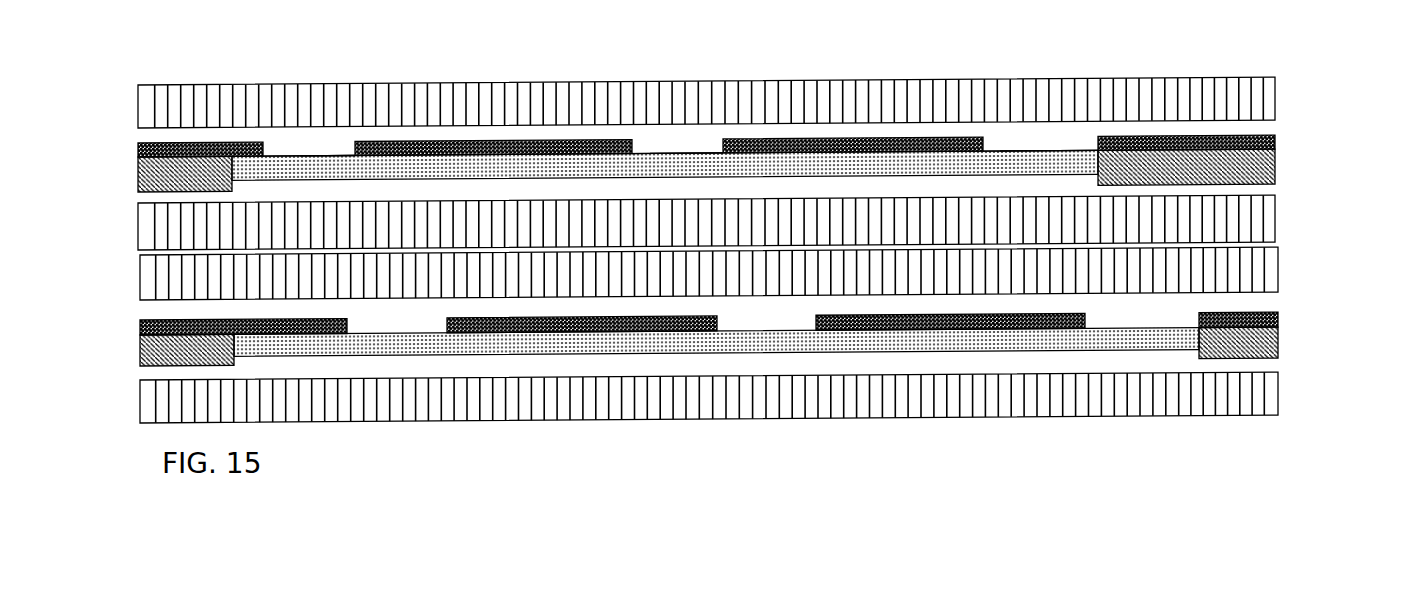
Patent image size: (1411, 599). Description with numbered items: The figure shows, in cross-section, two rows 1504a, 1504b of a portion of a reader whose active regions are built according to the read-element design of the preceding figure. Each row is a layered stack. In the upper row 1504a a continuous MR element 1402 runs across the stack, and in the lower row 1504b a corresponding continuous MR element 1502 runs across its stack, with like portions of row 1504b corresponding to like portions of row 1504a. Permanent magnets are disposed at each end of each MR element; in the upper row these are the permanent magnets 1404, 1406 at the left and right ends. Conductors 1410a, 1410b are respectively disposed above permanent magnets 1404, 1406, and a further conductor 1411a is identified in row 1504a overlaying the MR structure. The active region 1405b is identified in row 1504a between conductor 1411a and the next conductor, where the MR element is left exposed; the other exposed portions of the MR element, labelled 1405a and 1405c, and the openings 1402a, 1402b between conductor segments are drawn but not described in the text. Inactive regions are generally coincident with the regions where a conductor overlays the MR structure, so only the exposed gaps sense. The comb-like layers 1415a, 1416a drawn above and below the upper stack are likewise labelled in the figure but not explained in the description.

The continuous MR element 1402 is at (660, 180).
The first opening in electrode layer 1402a is at (287, 147).
The second opening in electrode layer 1402b is at (660, 145).
The permanent magnet 1404 is at (157, 158).
The first exposed region of dielectric 1405a is at (338, 157).
The active region 1405b is at (677, 153).
The third exposed region of dielectric 1405c is at (1028, 148).
The permanent magnet 1406 is at (1276, 166).
The conductor 1410a is at (197, 144).
The conductor 1410b is at (1276, 143).
The conductor 1411a is at (492, 143).
The upper shadow mask 1415a is at (1276, 99).
The lower shadow mask 1416a is at (1276, 217).
The continuous MR element 1502 is at (402, 358).
The row 1504a is at (713, 135).
The row 1504b is at (667, 347).